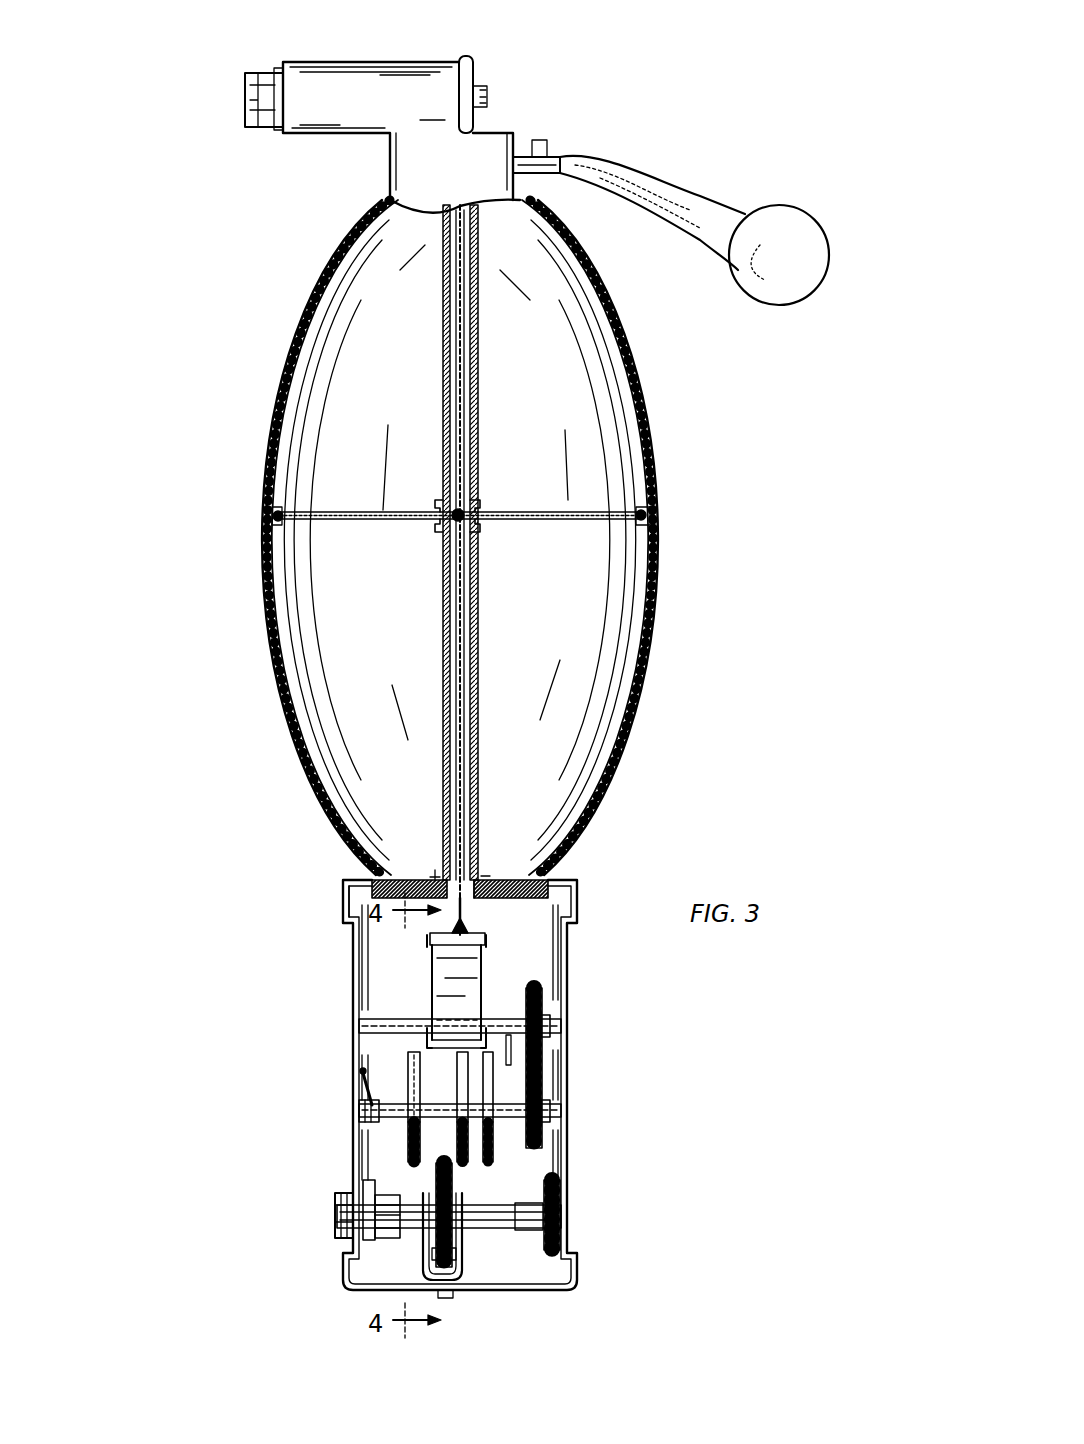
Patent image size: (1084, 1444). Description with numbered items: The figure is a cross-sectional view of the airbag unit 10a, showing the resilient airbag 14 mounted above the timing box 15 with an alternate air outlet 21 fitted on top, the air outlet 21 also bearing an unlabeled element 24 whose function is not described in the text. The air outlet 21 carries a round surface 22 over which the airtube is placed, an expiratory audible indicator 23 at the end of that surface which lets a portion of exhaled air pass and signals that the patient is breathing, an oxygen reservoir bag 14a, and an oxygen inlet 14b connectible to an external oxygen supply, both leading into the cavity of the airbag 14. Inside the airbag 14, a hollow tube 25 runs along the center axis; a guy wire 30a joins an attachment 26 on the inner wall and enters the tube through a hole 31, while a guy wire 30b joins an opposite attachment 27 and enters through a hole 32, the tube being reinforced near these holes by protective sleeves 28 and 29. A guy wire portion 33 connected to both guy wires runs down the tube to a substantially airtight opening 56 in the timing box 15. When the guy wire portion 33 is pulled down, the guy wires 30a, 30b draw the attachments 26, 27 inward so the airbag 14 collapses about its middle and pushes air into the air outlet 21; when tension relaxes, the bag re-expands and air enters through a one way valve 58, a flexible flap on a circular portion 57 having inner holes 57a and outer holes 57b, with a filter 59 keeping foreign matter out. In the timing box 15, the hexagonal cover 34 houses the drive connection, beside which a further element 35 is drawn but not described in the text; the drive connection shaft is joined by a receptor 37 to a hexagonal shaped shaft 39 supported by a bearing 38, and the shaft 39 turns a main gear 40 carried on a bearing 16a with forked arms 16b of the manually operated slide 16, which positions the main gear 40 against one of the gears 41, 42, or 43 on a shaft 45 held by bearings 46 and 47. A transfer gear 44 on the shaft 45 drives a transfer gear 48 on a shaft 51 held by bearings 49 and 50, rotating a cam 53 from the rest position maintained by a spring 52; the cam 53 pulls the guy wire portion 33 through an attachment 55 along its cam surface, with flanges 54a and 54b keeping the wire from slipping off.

The airbag unit 10a is at (684, 439).
The resilient airbag 14 is at (652, 400).
The oxygen reservoir bag 14a is at (770, 205).
The oxygen inlet 14b is at (548, 145).
The timing box 15 is at (577, 905).
The manually operated slide 16 is at (445, 1298).
The bearing 16a is at (370, 1185).
The forked arms 16b is at (470, 1290).
The air outlet 21 is at (375, 110).
The round surface 22 is at (255, 128).
The expiratory audible indicator 23 is at (283, 70).
The flange 24 is at (488, 95).
The hollow tube 25 is at (478, 355).
The attachment 26 is at (282, 515).
The attachment 27 is at (636, 518).
The protective sleeve 28 is at (483, 505).
The protective sleeve 29 is at (440, 528).
The guy wire 30a is at (340, 520).
The guy wire 30b is at (520, 512).
The hole 31 is at (440, 507).
The hole 32 is at (483, 525).
The guy wire portion 33 is at (462, 672).
The hexagonal cover 34 is at (338, 1236).
The knob cap 35 is at (337, 1210).
The receptor 37 is at (393, 1240).
The bearing 38 is at (563, 1200).
The hexagonal shaped shaft 39 is at (525, 1232).
The main gear 40 is at (465, 1280).
The gear 41 is at (405, 1135).
The gear 42 is at (460, 1163).
The gear 43 is at (488, 1160).
The transfer gear 44 is at (545, 1090).
The shaft 45 is at (420, 1120).
The bearing 46 is at (355, 1110).
The bearing 47 is at (560, 1112).
The transfer gear 48 is at (545, 1000).
The bearing 49 is at (550, 1024).
The bearing 50 is at (359, 1028).
The shaft 51 is at (510, 1050).
The spring 52 is at (390, 1100).
The cam 53 is at (492, 1005).
The flange 54a is at (483, 978).
The flange 54b is at (432, 990).
The attachment 55 is at (462, 930).
The substantially airtight opening 56 is at (468, 895).
The circular portion 57 is at (392, 875).
The holes 57a is at (487, 850).
The holes 57b is at (520, 876).
The one way valve 58 is at (428, 876).
The filter 59 is at (345, 905).